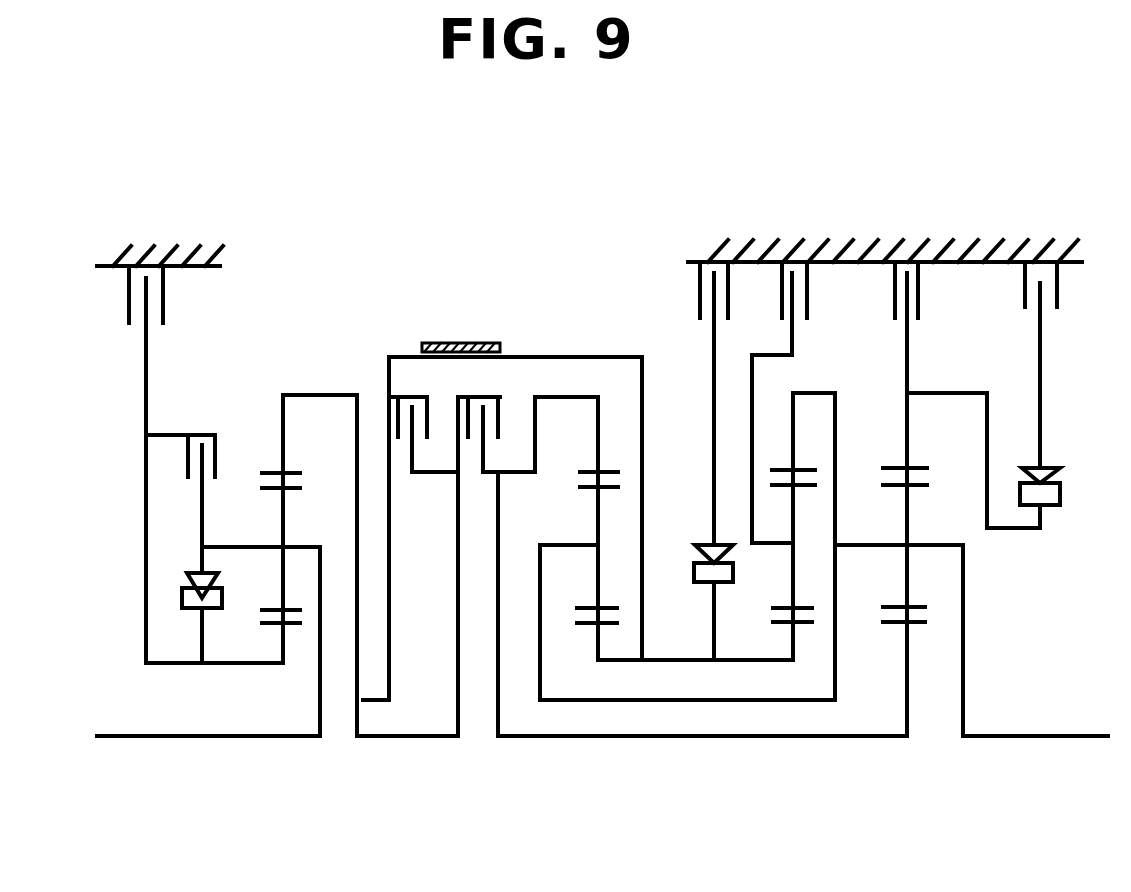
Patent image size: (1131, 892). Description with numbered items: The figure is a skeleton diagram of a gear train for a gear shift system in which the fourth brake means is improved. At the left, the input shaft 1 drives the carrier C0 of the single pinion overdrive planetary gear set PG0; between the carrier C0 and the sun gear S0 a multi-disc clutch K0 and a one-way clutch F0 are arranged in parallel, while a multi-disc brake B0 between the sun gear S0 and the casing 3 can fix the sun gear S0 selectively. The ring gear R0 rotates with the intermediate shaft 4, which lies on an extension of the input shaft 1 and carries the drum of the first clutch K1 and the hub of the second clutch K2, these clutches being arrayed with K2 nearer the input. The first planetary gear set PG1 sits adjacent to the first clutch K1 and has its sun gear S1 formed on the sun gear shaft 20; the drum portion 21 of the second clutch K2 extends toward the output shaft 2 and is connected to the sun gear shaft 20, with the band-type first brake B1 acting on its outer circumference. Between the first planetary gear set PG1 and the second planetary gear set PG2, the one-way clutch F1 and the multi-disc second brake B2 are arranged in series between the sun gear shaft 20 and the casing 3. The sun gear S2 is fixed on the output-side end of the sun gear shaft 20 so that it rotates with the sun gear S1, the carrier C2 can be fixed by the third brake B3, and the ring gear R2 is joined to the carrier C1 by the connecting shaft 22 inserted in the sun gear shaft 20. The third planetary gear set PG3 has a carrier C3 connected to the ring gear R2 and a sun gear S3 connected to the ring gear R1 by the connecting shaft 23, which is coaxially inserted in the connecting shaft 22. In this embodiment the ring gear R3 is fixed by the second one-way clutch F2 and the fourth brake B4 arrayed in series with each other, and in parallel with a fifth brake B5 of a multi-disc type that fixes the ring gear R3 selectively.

The input shaft 1 is at (175, 738).
The output shaft 2 is at (1075, 738).
The casing 3 is at (192, 266).
The intermediate shaft 4 is at (400, 738).
The sun gear shaft 20 is at (688, 663).
The drum portion 21 is at (562, 357).
The connecting shaft 22 is at (652, 702).
The connecting shaft 23 is at (597, 738).
The multi-disc brake B0 is at (181, 464).
The multi-disc clutch K0 is at (202, 435).
The one-way clutch F0 is at (192, 581).
The ring gear R0 is at (303, 462).
The carrier C0 is at (301, 540).
The sun gear S0 is at (276, 623).
The single pinion type planetary gear set PG0 is at (270, 609).
The first brake B1 is at (461, 324).
The first clutch K1 is at (486, 396).
The second clutch K2 is at (406, 378).
The ring gear R1 is at (594, 470).
The carrier C1 is at (574, 542).
The sun gear S1 is at (580, 640).
The first planetary gear set PG1 is at (569, 618).
The second brake B2 is at (682, 403).
The one-way clutch F1 is at (709, 543).
The third brake B3 is at (806, 402).
The ring gear R2 is at (807, 456).
The carrier C2 is at (754, 544).
The sun gear S2 is at (807, 646).
The second planetary gear set PG2 is at (791, 615).
The fifth brake B5 is at (935, 499).
The ring gear R3 is at (910, 470).
The carrier C3 is at (912, 546).
The sun gear S3 is at (920, 638).
The third planetary gear set PG3 is at (937, 616).
The fourth brake B4 is at (1071, 365).
The second one-way clutch F2 is at (1058, 494).